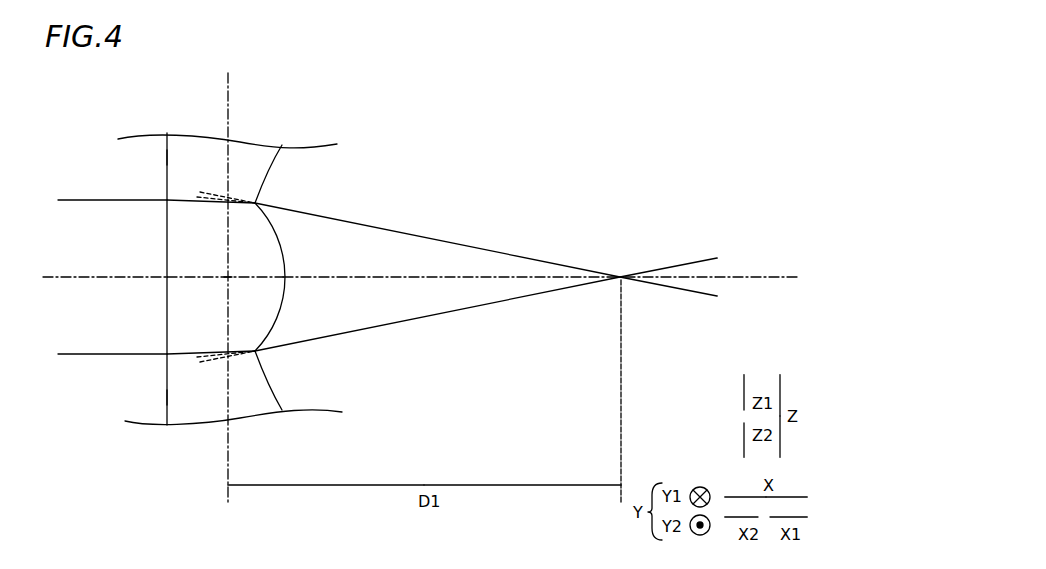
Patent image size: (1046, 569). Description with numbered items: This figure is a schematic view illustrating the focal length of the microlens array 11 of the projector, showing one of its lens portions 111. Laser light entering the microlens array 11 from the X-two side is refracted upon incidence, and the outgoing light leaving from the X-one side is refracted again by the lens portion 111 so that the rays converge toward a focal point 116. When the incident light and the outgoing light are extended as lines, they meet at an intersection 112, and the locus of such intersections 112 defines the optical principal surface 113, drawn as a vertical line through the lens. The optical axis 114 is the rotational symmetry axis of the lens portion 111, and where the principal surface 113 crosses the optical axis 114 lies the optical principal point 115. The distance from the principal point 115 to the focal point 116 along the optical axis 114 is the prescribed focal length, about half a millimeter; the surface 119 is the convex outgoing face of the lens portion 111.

The microlens array 11 is at (173, 117).
The lens portion 111 is at (202, 172).
The intersection 112 is at (230, 195).
The optical principal surface 113 is at (227, 102).
The optical axis 114 is at (787, 273).
The optical principal point 115 is at (227, 270).
The focal point 116 is at (617, 280).
The convex emission surface 119 is at (285, 298).